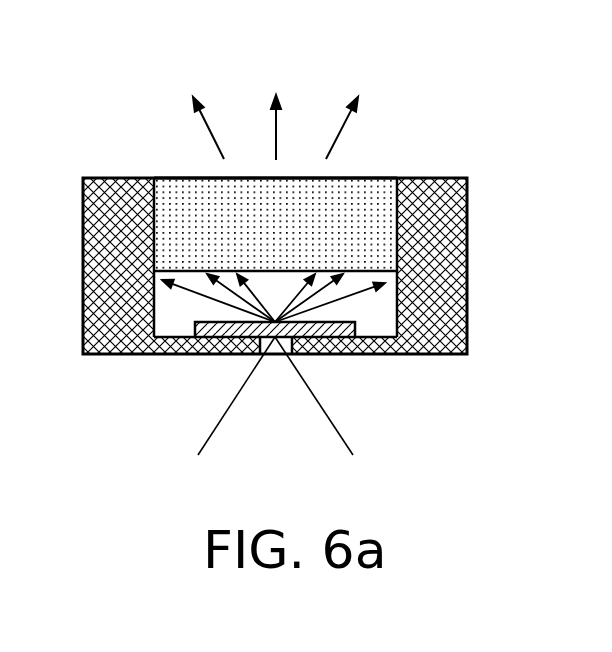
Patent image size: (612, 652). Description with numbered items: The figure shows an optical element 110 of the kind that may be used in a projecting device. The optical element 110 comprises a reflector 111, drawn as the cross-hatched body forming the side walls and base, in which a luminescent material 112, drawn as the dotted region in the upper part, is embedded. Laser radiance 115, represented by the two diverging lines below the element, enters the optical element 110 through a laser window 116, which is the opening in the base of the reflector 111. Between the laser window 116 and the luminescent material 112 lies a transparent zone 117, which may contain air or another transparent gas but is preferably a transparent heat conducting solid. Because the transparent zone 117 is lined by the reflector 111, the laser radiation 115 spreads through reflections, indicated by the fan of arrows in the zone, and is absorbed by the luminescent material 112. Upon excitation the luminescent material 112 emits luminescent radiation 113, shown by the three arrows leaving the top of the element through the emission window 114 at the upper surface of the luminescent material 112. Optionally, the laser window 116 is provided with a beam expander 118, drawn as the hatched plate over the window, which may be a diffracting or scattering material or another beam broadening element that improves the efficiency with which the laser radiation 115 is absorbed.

The optical element 110 is at (107, 74).
The reflector 111 is at (455, 282).
The luminescent material 112 is at (381, 245).
The luminescent radiation 113 is at (340, 133).
The light exit surface 114 is at (178, 192).
The laser radiance 115 is at (347, 445).
The laser window 116 is at (275, 349).
The transparent zone 117 is at (377, 320).
The beam expander 118 is at (193, 355).